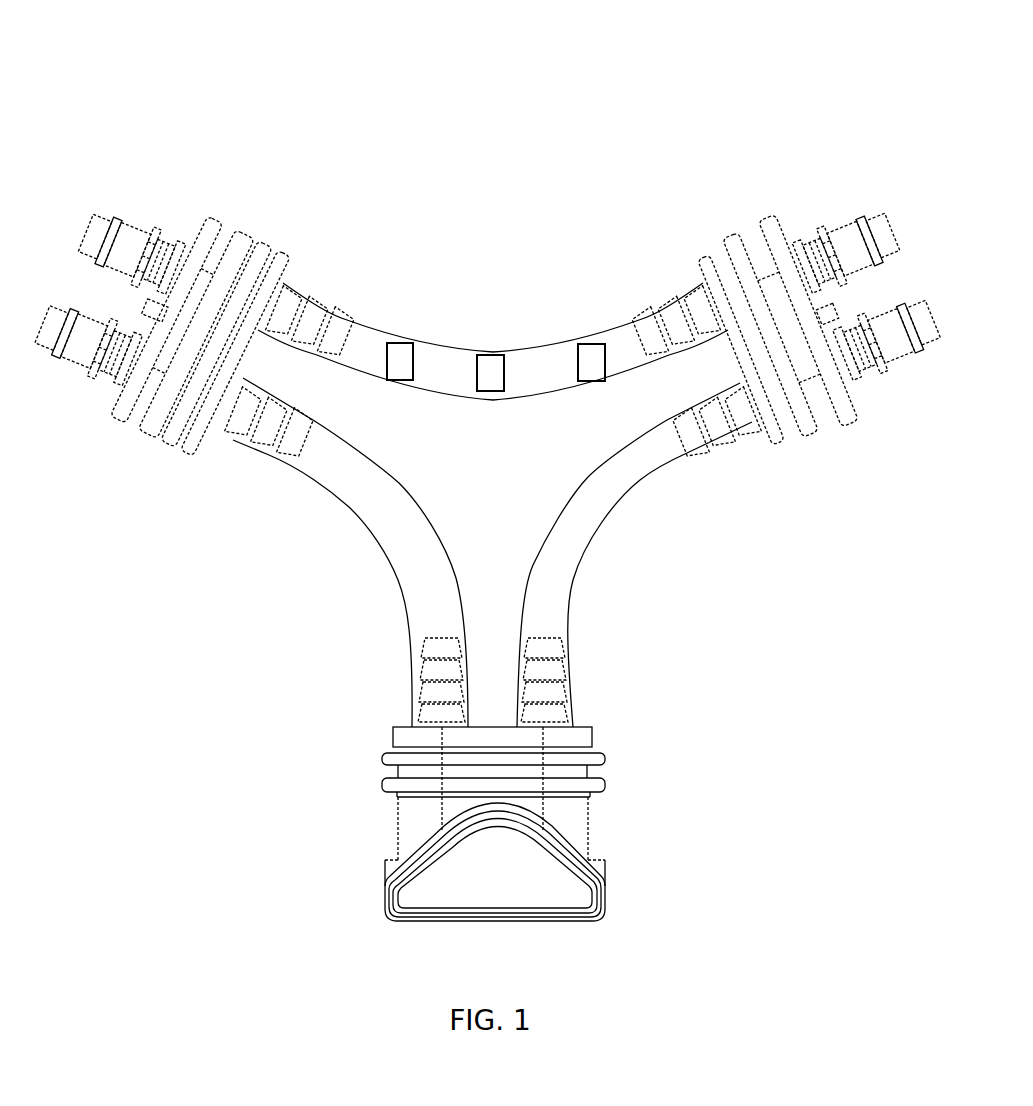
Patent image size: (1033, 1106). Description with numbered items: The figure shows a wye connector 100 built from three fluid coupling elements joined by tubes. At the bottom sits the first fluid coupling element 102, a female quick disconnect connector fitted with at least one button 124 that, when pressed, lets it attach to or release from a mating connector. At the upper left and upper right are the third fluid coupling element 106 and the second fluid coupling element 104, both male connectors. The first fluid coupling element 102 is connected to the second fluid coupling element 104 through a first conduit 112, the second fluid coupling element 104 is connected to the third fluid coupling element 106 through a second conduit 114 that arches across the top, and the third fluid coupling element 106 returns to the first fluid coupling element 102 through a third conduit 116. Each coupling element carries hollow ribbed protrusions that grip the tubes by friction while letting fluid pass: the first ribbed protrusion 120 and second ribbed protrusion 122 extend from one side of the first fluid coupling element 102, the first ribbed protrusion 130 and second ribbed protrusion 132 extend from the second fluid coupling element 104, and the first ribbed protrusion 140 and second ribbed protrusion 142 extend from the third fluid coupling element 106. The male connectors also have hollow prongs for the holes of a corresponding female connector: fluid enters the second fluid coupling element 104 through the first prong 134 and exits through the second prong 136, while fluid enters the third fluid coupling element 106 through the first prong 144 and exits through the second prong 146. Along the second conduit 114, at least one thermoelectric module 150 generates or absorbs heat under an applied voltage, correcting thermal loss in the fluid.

The wye connector 100 is at (380, 160).
The first fluid coupling element 102 is at (583, 822).
The second fluid coupling element 104 is at (825, 437).
The third fluid coupling element 106 is at (127, 423).
The first conduit 112 is at (597, 533).
The second conduit 114 is at (533, 348).
The third conduit 116 is at (345, 507).
The first ribbed protrusion 120 is at (425, 667).
The second ribbed protrusion 122 is at (562, 707).
The button 124 is at (555, 898).
The first ribbed protrusion 130 is at (707, 442).
The second ribbed protrusion 132 is at (651, 313).
The first prong 134 is at (905, 367).
The second prong 136 is at (838, 218).
The first ribbed protrusion 140 is at (348, 318).
The second ribbed protrusion 142 is at (260, 440).
The first prong 144 is at (142, 220).
The second prong 146 is at (83, 373).
The thermoelectric module 150 is at (400, 343).